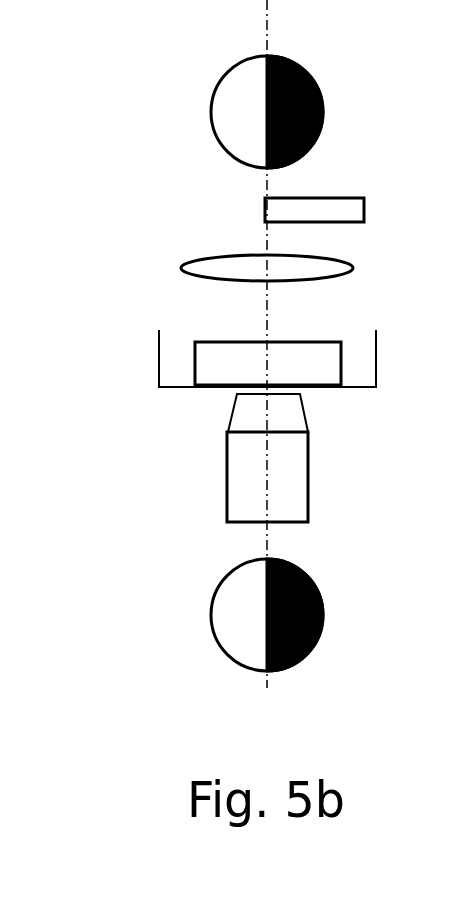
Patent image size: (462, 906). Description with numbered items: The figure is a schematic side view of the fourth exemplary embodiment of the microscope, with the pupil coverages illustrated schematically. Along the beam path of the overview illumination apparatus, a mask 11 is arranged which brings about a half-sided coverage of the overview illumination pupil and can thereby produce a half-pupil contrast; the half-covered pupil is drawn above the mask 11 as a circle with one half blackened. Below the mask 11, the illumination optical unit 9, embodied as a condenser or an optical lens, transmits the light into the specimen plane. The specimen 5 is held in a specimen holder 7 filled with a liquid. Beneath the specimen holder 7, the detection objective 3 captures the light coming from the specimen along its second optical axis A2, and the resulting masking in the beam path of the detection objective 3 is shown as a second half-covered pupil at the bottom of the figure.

The detection objective 3 is at (309, 450).
The specimen 5 is at (317, 365).
The specimen holder 7 is at (157, 365).
The illumination optical unit 9 is at (327, 258).
The mask 11 is at (331, 207).
The second optical axis A2 is at (268, 543).